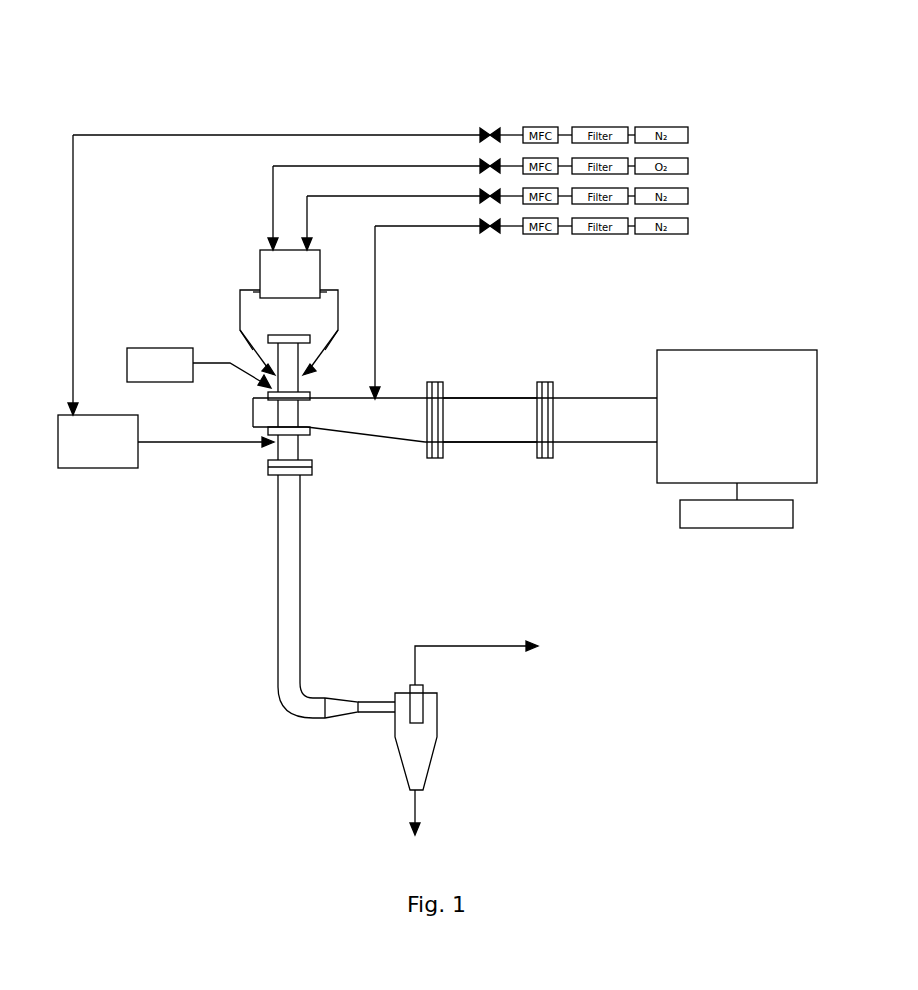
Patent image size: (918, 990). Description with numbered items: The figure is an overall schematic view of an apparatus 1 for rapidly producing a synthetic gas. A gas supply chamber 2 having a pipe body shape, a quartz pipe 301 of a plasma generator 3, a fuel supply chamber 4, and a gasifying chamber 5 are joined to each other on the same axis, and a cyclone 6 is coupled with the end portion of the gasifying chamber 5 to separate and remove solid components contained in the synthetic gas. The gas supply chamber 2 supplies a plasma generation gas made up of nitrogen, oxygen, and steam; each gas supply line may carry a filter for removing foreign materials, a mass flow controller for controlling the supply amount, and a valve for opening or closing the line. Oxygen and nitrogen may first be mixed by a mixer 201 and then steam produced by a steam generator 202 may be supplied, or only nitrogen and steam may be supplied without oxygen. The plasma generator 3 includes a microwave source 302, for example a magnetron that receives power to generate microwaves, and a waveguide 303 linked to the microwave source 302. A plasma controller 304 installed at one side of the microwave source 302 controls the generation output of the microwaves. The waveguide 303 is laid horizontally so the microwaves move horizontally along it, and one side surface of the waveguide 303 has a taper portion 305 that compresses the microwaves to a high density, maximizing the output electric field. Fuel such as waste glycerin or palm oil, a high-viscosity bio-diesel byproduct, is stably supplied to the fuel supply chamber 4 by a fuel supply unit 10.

The apparatus for rapidly producing a synthetic gas 1 is at (487, 36).
The fuel supply unit 10 is at (166, 301).
The gas supply chamber 2 is at (302, 390).
The mixer 201 is at (260, 282).
The steam generator 202 is at (173, 352).
The plasma generator 3 is at (580, 442).
The quartz pipe 301 is at (270, 415).
The microwave source 302 is at (688, 362).
The waveguide 303 is at (482, 442).
The plasma controller 304 is at (710, 523).
The taper portion 305 is at (380, 433).
The fuel supply chamber 4 is at (293, 443).
The gasifying chamber 5 is at (283, 585).
The cyclone 6 is at (423, 740).